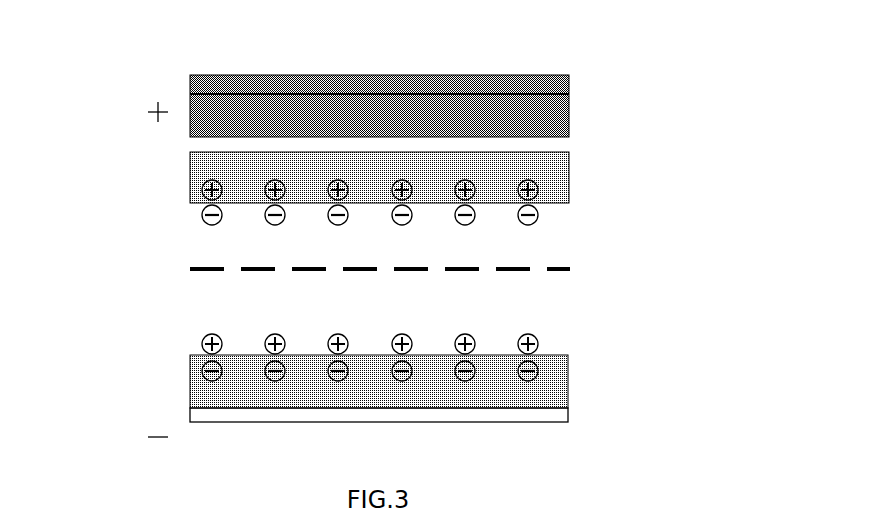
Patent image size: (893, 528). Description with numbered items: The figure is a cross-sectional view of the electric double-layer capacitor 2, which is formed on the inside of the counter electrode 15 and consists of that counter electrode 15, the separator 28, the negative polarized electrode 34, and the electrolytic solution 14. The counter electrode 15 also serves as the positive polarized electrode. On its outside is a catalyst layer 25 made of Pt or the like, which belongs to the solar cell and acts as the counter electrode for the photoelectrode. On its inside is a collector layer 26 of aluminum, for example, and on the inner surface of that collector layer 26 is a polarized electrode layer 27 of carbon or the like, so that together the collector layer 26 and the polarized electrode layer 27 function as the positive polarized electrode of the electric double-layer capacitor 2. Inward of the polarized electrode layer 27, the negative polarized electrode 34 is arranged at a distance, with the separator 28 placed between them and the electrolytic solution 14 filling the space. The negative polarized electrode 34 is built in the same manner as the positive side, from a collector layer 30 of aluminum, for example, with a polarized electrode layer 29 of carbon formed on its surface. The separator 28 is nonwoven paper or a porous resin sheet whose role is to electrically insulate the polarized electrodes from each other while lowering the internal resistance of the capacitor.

The electric double-layer capacitor 2 is at (697, 241).
The counter electrode 15 is at (142, 180).
The catalyst layer 25 is at (553, 76).
The collector layer 26 is at (523, 148).
The polarized electrode layer 27 is at (495, 168).
The separator 28 is at (195, 271).
The electrolytic solution 14 is at (247, 306).
The negative polarized electrode 34 is at (115, 337).
The polarized electrode layer 29 is at (553, 392).
The collector layer 30 is at (540, 418).